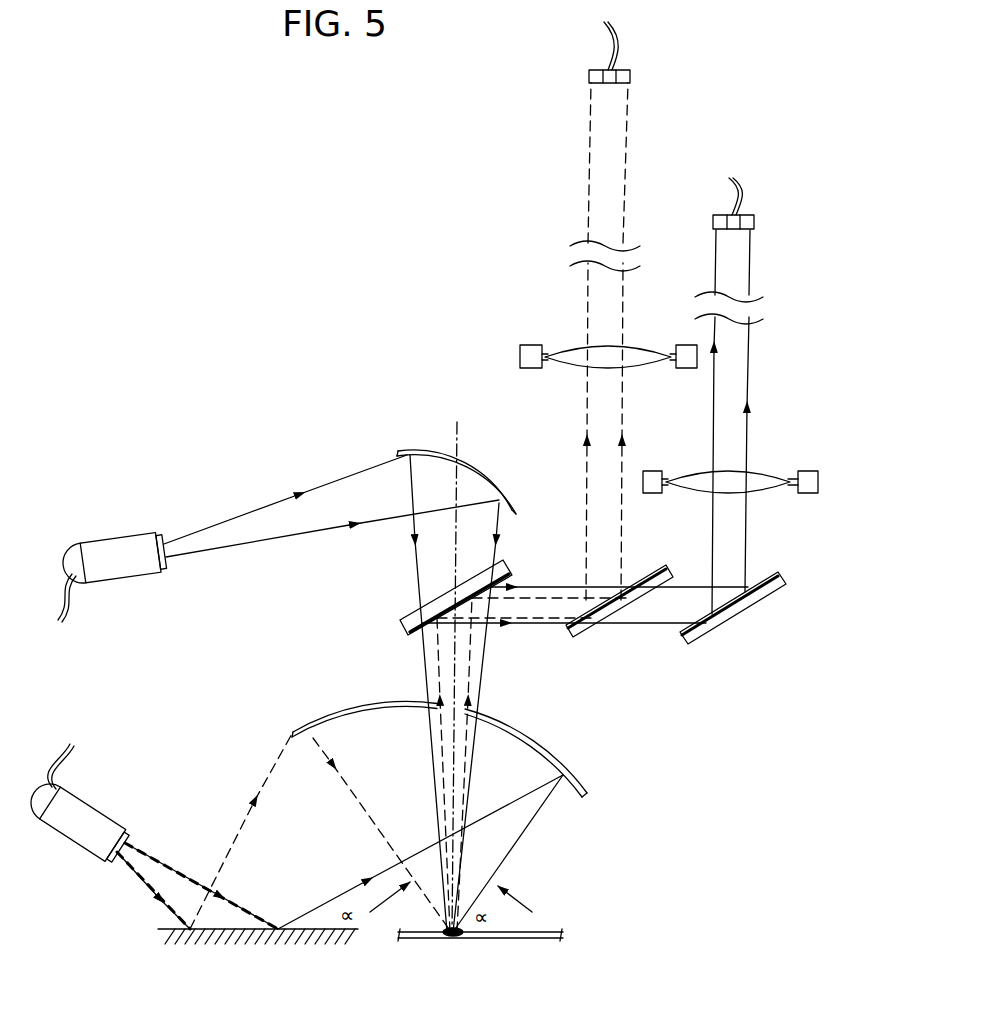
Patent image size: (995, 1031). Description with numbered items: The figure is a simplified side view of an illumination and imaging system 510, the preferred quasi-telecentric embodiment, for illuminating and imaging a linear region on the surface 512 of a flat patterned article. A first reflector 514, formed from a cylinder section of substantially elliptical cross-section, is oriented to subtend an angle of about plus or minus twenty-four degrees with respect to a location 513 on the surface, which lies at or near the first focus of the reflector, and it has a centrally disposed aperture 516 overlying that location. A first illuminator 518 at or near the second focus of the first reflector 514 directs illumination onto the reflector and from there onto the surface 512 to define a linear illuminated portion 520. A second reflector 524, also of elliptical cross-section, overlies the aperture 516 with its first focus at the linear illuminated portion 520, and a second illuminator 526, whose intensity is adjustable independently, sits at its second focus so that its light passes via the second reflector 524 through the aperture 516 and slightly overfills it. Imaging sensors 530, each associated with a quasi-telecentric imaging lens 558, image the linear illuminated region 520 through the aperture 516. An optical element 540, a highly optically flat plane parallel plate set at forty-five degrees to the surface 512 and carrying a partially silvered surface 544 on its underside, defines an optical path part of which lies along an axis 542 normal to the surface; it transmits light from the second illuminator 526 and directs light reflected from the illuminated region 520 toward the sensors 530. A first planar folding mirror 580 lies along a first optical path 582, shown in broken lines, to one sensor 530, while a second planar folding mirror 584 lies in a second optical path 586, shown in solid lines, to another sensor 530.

The illumination and imaging system 510 is at (218, 266).
The flat patterned article surface 512 is at (556, 932).
The location on surface 513 is at (430, 945).
The first reflector 514 is at (545, 752).
The aperture 516 is at (466, 710).
The first illuminator 518 is at (96, 812).
The linear illuminated portion 520 is at (455, 942).
The second reflector 524 is at (493, 492).
The second illuminator 526 is at (120, 550).
The imaging sensor 530 is at (630, 77).
The optical element 540 is at (400, 620).
The axis 542 is at (455, 436).
The partially silvered surface 544 is at (516, 576).
The quasi-telecentric imaging lens 558 is at (570, 352).
The first planar folding mirror 580 is at (612, 634).
The first optical path 582 is at (606, 432).
The second planar folding mirror 584 is at (740, 610).
The second optical path 586 is at (762, 549).